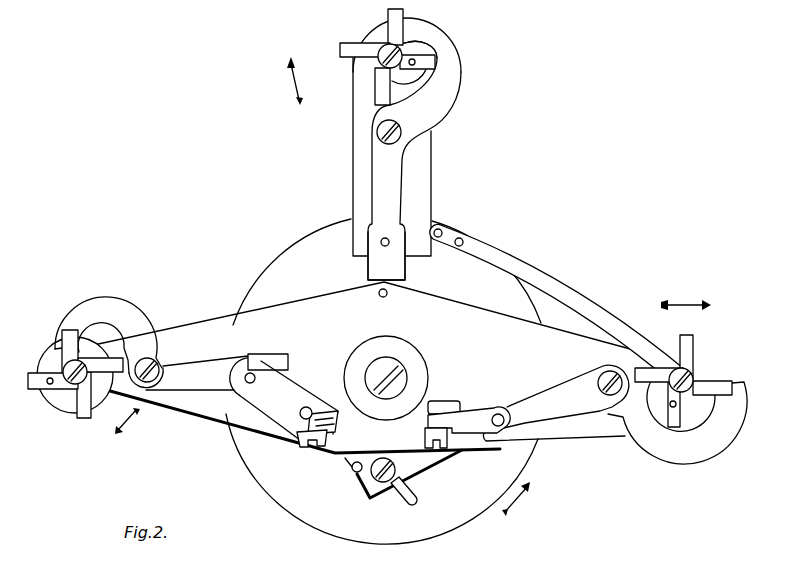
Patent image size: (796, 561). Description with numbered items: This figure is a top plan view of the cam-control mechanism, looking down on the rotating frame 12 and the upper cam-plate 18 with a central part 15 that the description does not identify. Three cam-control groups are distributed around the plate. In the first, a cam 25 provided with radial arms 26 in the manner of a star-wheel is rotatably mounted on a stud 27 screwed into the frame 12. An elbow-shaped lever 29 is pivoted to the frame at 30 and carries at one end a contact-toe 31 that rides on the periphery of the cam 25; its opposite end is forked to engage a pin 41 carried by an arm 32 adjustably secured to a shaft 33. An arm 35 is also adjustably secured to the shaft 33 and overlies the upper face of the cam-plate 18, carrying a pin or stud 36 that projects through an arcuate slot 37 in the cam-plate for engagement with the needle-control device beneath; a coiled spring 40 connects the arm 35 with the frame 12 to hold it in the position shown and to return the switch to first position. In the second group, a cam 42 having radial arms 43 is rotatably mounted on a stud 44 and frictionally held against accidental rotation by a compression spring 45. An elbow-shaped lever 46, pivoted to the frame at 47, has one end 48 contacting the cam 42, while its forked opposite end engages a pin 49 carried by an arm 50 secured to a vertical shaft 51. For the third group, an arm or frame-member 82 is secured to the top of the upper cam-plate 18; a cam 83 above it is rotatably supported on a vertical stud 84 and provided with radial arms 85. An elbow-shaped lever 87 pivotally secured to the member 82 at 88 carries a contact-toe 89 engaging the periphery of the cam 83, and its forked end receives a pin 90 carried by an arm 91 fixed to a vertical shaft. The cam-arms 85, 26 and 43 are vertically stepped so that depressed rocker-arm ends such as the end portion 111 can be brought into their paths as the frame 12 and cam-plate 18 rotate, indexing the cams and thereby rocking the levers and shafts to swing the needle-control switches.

The frame 12 is at (362, 367).
The central hub screw 15 is at (398, 351).
The upper cam-plate 18 is at (300, 504).
The cam 25 is at (640, 412).
The radial arms 26 is at (687, 348).
The stud 27 is at (693, 371).
The elbow-shaped lever 29 is at (655, 392).
The pivot 30 is at (602, 373).
The contact-toe 31 is at (712, 383).
The arm 32 is at (473, 413).
The shaft 33 is at (458, 411).
The arm 35 is at (418, 460).
The pin or stud 36 is at (381, 485).
The arcuate slot 37 is at (404, 496).
The coiled spring 40 is at (345, 459).
The pin 41 is at (500, 414).
The cam 42 is at (62, 397).
The radial arms 43 is at (84, 420).
The stud 44 is at (63, 365).
The compression spring 45 is at (33, 377).
The elbow-shaped lever 46 is at (108, 335).
The pivot 47 is at (161, 366).
The end 48 is at (54, 340).
The pin 49 is at (249, 372).
The arm 50 is at (288, 397).
The vertical shaft 51 is at (312, 407).
The arm or frame-member 82 is at (356, 176).
The cam 83 is at (426, 82).
The vertical stud 84 is at (380, 60).
The radial arms 85 is at (344, 49).
The elbow-shaped lever 87 is at (440, 107).
The pivot 88 is at (402, 135).
The contact-toe 89 is at (430, 43).
The pin 90 is at (390, 240).
The arm 91 is at (386, 256).
The forwardly-extending end portion 111 is at (440, 532).